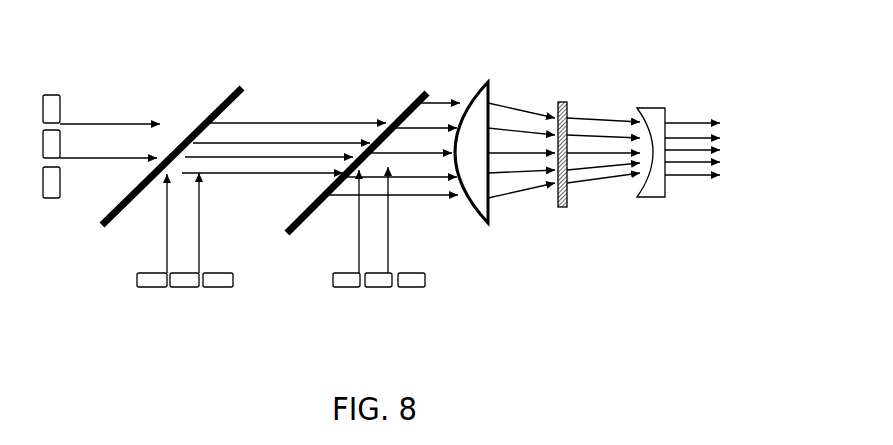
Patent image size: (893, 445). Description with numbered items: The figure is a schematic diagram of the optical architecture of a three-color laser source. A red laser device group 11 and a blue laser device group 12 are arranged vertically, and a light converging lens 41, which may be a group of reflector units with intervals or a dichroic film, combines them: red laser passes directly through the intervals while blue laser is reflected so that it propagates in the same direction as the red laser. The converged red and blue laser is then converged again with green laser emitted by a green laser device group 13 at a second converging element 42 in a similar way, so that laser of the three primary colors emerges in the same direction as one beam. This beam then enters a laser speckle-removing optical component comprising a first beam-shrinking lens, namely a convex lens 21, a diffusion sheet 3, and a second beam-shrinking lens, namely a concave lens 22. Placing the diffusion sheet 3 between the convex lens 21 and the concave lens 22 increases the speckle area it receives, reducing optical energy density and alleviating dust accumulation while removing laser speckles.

The red laser device group 11 is at (48, 92).
The blue laser device group 12 is at (178, 287).
The green laser device group 13 is at (375, 287).
The light converging lens 41 is at (235, 88).
The second beam splitter 42 is at (415, 88).
The convex lens 21 is at (487, 227).
The diffusion sheet 3 is at (562, 100).
The concave lens 22 is at (648, 107).